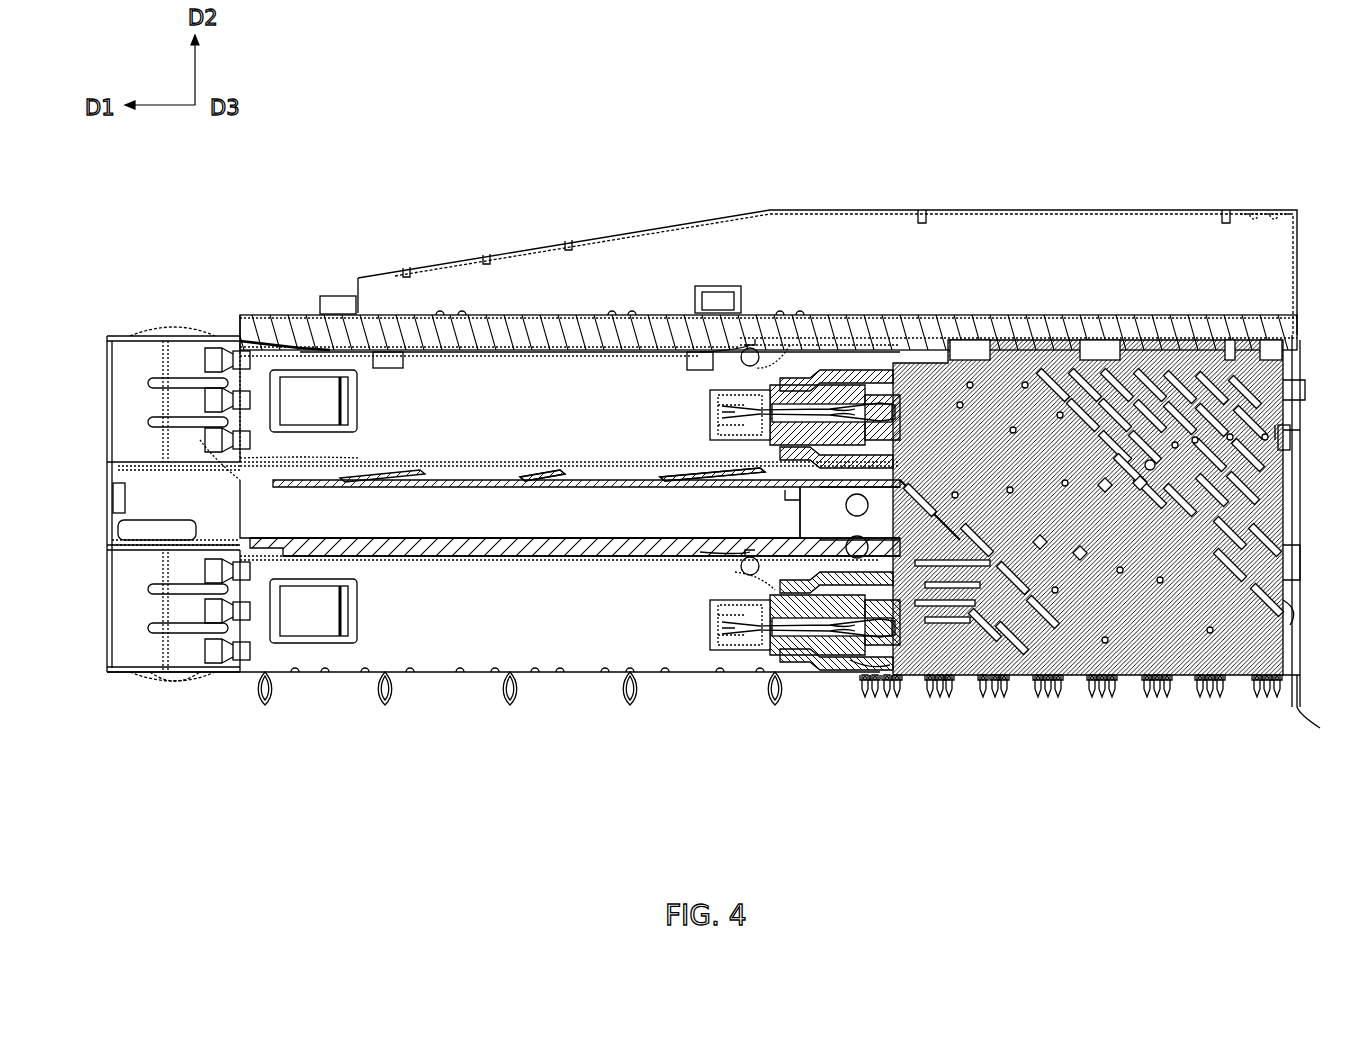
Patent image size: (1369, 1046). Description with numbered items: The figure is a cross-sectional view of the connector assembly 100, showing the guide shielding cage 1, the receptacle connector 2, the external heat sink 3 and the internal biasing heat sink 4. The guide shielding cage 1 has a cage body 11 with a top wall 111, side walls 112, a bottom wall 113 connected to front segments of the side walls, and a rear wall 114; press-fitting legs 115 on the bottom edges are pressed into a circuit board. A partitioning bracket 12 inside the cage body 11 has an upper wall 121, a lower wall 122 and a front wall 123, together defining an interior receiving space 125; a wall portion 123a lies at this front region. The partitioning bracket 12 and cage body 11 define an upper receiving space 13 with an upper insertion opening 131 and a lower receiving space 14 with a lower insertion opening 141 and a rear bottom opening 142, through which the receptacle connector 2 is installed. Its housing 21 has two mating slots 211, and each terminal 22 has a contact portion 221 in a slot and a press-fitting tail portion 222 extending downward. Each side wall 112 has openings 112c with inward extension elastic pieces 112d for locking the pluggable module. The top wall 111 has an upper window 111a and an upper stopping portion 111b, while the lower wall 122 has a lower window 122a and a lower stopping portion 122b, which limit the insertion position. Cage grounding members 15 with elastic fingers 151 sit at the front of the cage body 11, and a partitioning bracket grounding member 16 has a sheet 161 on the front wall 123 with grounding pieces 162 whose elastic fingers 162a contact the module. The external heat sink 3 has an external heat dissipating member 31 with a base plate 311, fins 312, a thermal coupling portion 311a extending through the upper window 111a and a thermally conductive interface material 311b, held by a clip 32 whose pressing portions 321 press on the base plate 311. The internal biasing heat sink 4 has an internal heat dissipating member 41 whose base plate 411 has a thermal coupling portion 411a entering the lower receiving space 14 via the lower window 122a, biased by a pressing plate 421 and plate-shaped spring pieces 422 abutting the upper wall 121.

The connector assembly 100 is at (455, 84).
The guide shielding cage 1 is at (467, 712).
The receptacle connector 2 is at (741, 675).
The external heat sink 3 is at (748, 180).
The internal biasing heat sink 4 is at (486, 565).
The cage body 11 is at (432, 680).
The partitioning bracket 12 is at (455, 438).
The upper receiving space 13 is at (128, 378).
The lower receiving space 14 is at (120, 642).
The cage grounding member 15 is at (196, 714).
The partitioning bracket grounding member 16 is at (105, 462).
The housing 21 is at (1132, 622).
The terminal 22 is at (960, 567).
The external heat dissipating member 31 is at (712, 212).
The clip 32 is at (562, 270).
The internal heat dissipating member 41 is at (492, 565).
The top wall 111 is at (240, 340).
The upper window 111a is at (250, 338).
The upper stopping portion 111b is at (755, 350).
The side wall 112 is at (572, 656).
The opening 112c is at (360, 592).
The inward extension elastic piece 112d is at (330, 620).
The bottom wall 113 is at (352, 690).
The rear wall 114 is at (1300, 478).
The press-fitting leg 115 is at (780, 695).
The upper wall 121 is at (480, 465).
The lower wall 122 is at (758, 558).
The lower window 122a is at (742, 563).
The lower stopping portion 122b is at (740, 588).
The front wall 123 is at (125, 473).
The front recess wall 123a is at (118, 546).
The interior receiving space 125 is at (318, 470).
The upper insertion opening 131 is at (185, 330).
The lower insertion opening 141 is at (150, 672).
The bottom opening 142 is at (790, 680).
The elastic finger 151 is at (218, 672).
The sheet 161 is at (108, 500).
The elastic finger 162a is at (197, 458).
The grounding piece 162 is at (481, 482).
The mating slot 211 is at (770, 410).
The contact portion 221 is at (735, 430).
The press-fitting tail portion 222 is at (990, 698).
The base plate 311 is at (272, 330).
The thermal coupling portion 311a is at (510, 350).
The thermally conductive interface material 311b is at (555, 372).
The heat dissipating fin 312 is at (540, 262).
The pressing portion 321 is at (335, 312).
The base plate 411 is at (455, 538).
The thermal coupling portion 411a is at (512, 558).
The pressing plate 421 is at (580, 472).
The plate-shaped spring piece 422 is at (700, 472).